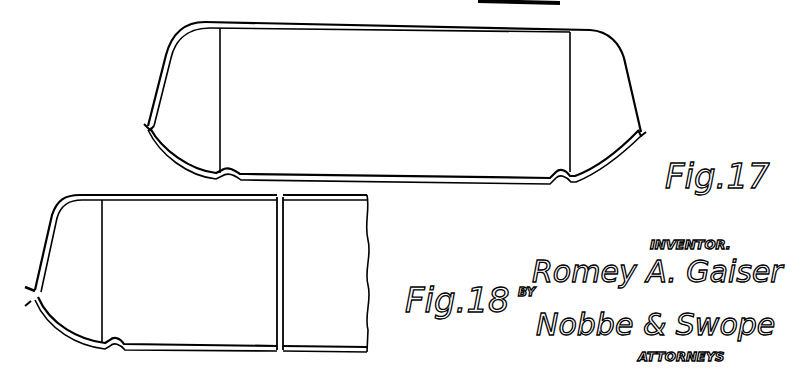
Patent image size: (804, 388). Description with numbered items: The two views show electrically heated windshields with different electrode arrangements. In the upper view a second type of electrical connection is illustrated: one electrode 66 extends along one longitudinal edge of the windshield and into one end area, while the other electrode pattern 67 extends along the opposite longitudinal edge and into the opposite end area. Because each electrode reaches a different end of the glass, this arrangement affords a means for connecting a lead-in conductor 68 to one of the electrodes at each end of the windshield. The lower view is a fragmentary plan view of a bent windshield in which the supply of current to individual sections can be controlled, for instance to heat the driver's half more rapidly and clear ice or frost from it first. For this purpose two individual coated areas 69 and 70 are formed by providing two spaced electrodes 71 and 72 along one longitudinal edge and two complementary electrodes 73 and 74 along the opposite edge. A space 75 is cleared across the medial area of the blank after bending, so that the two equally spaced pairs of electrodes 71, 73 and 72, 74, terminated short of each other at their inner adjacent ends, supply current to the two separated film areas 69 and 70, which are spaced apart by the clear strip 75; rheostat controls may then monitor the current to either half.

In FIG. 17, the electrode 66 is at (283, 26).
In FIG. 17, the electrode pattern 67 is at (460, 180).
In FIG. 17, the lead-in conductor 68 is at (146, 126).
In FIG. 18, the coated area 69 is at (148, 243).
In FIG. 18, the coated area 70 is at (343, 253).
In FIG. 18, the electrode 71 is at (185, 195).
In FIG. 18, the electrode 72 is at (320, 198).
In FIG. 18, the complementary electrode 73 is at (167, 343).
In FIG. 18, the complementary electrode 74 is at (311, 347).
In FIG. 18, the clear space 75 is at (281, 275).